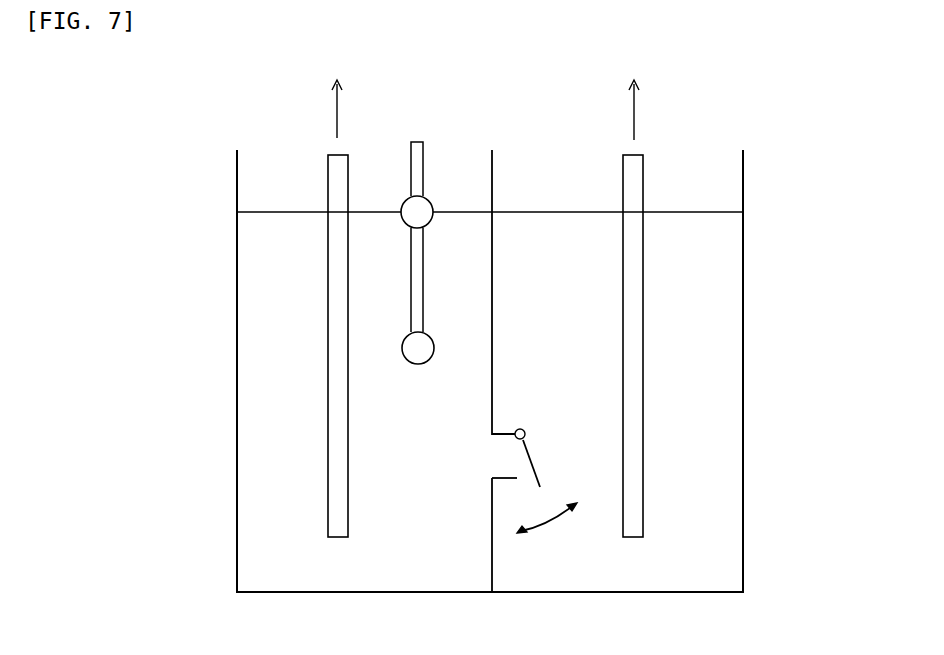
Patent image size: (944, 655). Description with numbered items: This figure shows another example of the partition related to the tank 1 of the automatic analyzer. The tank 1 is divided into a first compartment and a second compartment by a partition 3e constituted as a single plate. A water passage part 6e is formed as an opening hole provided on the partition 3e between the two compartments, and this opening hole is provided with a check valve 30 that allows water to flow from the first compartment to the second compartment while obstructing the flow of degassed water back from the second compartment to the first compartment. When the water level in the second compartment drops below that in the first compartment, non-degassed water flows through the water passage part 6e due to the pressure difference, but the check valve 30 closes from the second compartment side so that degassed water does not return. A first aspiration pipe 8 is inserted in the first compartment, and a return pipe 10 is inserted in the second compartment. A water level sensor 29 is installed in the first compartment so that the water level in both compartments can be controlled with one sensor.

The treatment tank 1 is at (237, 360).
The partition 3e is at (493, 173).
The water passage part 6e is at (505, 453).
The first aspiration pipe 8 is at (327, 298).
The return pipe 10 is at (643, 425).
The water level sensor 29 is at (411, 170).
The check valve 30 is at (529, 447).